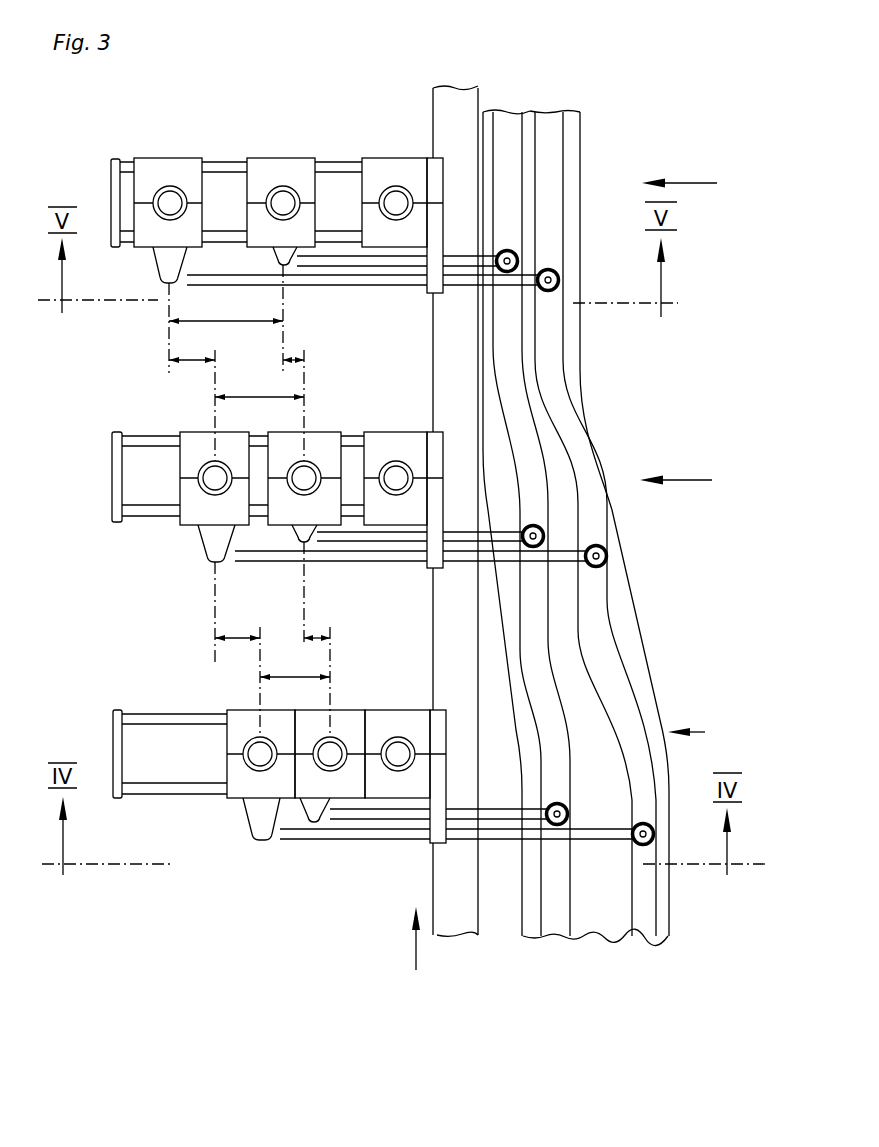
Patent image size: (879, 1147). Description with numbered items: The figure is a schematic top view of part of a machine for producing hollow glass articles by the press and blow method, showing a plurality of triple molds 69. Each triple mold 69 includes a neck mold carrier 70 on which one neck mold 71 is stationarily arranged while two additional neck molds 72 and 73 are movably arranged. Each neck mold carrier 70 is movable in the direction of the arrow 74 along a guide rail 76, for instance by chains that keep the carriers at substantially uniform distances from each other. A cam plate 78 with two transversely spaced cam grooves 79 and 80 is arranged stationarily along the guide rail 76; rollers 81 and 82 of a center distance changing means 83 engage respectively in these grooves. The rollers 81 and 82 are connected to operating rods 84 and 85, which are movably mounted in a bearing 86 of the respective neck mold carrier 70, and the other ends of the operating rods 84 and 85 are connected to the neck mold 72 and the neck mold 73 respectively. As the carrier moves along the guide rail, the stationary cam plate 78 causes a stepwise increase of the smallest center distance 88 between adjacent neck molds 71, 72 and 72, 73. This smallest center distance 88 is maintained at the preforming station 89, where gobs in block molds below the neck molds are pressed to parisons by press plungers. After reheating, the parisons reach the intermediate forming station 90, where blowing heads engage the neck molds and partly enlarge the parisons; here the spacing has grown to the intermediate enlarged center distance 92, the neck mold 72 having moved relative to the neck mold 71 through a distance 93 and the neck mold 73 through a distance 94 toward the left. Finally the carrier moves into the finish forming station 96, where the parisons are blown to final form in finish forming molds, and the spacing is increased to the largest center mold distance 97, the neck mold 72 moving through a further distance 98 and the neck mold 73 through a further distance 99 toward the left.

The triple mold 69 is at (357, 699).
The neck mold carrier 70 is at (106, 187).
The neck mold 71 is at (392, 148).
The neck mold 72 is at (291, 148).
The neck mold 73 is at (183, 148).
The arrow 74 is at (416, 946).
The guide rail 76 is at (457, 937).
The cam plate 78 is at (590, 968).
The cam groove 79 is at (545, 917).
The cam groove 80 is at (660, 927).
The roller 81 is at (561, 805).
The roller 82 is at (657, 823).
The center distance changing means 83 is at (390, 848).
The operating rod 84 is at (505, 810).
The operating rod 85 is at (503, 832).
The bearing 86 is at (450, 828).
The smallest center distance 88 is at (287, 676).
The preforming station 89 is at (699, 733).
The intermediate forming station 90 is at (687, 482).
The intermediate enlarged center distance 92 is at (248, 397).
The distance 93 is at (318, 636).
The distance 94 is at (240, 636).
The finish forming station 96 is at (696, 190).
The largest center mold distance 97 is at (217, 320).
The further distance 98 is at (292, 356).
The further distance 99 is at (194, 364).